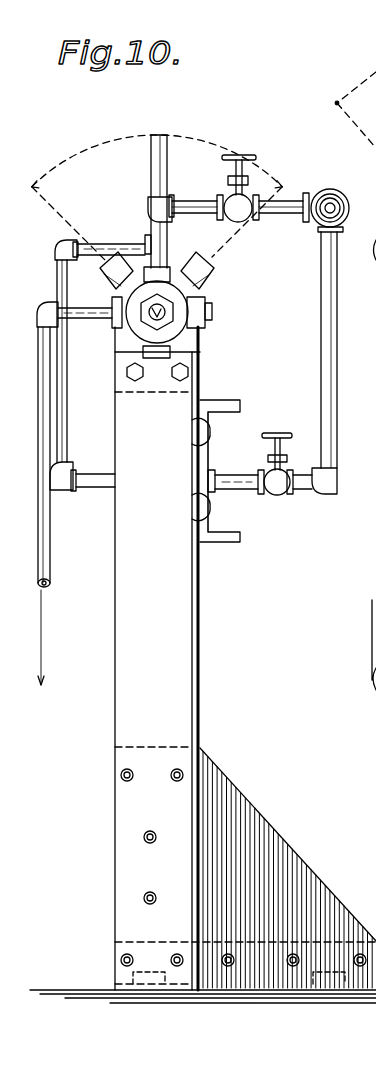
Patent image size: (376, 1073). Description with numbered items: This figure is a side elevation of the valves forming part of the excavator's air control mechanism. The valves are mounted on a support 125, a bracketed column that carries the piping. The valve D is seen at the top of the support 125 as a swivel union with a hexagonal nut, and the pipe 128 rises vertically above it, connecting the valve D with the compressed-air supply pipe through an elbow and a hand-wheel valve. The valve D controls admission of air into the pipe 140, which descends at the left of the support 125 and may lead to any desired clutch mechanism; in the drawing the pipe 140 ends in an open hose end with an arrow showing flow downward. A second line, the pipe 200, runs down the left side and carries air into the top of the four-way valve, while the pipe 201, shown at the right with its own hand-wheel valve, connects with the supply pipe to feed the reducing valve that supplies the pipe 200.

The pipe 128 is at (160, 237).
The valve D is at (174, 334).
The support 125 is at (222, 406).
The pipe 200 is at (93, 477).
The pipe 140 is at (49, 524).
The pipe 201 is at (292, 509).